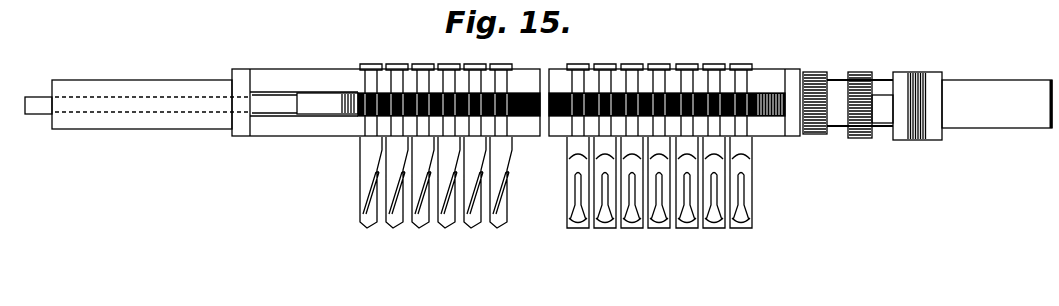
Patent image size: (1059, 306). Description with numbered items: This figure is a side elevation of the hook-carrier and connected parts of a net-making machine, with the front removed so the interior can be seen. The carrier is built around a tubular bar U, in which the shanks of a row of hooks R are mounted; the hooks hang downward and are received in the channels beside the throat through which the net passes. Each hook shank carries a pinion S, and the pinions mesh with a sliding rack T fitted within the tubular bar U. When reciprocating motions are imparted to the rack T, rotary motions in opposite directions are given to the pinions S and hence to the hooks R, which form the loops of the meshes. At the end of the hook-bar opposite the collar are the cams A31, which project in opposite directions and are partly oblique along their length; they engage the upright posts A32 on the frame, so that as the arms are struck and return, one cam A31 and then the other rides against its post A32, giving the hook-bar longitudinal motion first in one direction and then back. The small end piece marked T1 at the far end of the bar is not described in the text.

The tube end T1 is at (26, 100).
The tubular bar U is at (151, 91).
The sliding rack T is at (564, 93).
The pinions S is at (356, 114).
The hooks R is at (362, 197).
The cams A31 is at (880, 61).
The upright posts A32 is at (920, 58).